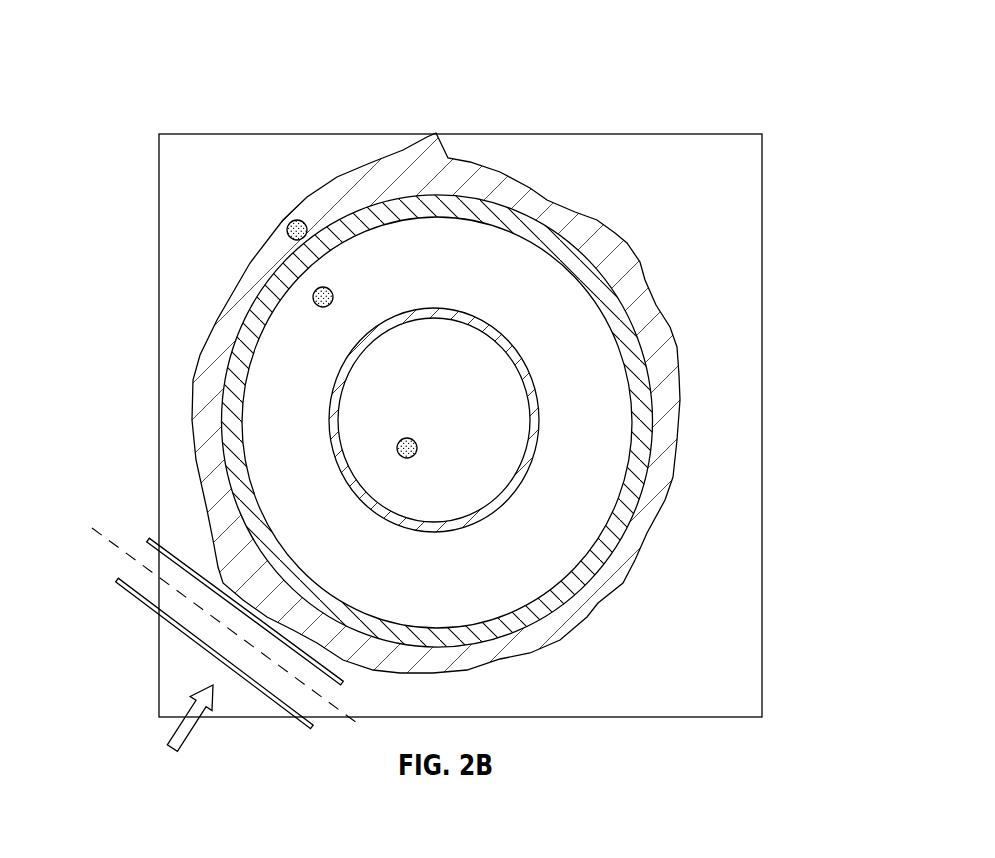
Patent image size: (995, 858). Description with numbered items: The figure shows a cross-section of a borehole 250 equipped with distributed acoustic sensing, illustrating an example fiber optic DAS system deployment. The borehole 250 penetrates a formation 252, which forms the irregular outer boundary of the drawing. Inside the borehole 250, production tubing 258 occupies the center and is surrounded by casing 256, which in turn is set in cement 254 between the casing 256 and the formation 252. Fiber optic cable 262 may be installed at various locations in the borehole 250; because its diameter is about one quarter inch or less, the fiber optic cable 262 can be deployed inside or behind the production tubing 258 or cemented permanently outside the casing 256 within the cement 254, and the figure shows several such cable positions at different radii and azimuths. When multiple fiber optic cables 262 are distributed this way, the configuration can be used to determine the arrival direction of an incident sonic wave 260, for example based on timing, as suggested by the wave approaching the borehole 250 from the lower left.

The borehole 250 is at (524, 127).
The formation 252 is at (750, 196).
The cement 254 is at (618, 257).
The casing 256 is at (542, 210).
The production tubing 258 is at (539, 432).
The incident sonic wave 260 is at (138, 600).
The fiber optic cable 262 is at (407, 438).